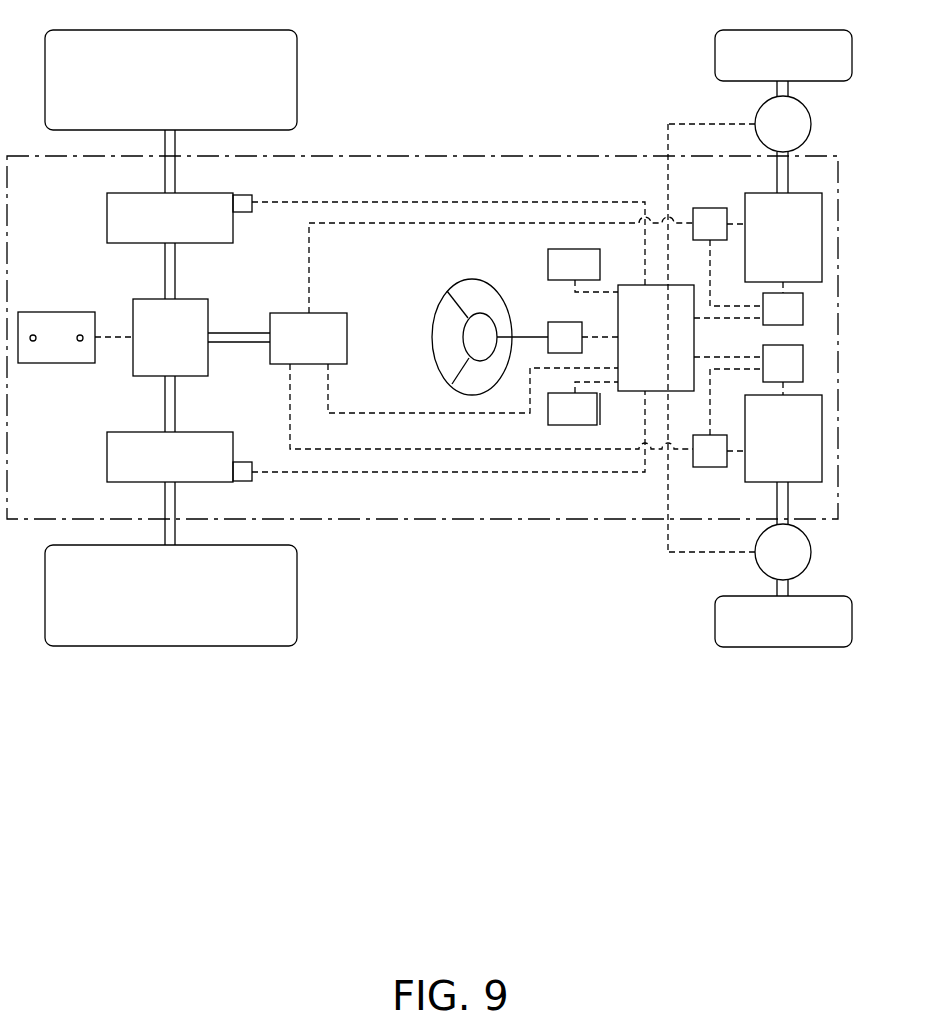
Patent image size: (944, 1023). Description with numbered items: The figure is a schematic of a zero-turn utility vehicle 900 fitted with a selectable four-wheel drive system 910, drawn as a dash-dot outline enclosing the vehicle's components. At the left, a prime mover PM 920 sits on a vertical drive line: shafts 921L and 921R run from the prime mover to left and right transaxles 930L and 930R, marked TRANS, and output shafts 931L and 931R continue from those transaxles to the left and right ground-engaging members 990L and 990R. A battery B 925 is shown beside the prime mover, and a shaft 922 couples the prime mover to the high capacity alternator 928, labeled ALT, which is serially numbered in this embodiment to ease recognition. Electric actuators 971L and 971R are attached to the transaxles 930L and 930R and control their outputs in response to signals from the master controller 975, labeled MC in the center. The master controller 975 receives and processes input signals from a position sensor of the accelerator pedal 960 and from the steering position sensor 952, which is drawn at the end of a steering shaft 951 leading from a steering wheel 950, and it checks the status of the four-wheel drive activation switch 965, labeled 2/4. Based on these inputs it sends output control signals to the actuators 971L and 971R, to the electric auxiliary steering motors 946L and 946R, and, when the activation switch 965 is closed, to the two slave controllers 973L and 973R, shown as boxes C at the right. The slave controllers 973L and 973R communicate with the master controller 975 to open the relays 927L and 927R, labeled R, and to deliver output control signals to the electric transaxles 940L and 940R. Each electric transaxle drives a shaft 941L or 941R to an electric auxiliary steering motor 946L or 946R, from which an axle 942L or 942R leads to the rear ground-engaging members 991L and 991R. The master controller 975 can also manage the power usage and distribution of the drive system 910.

The utility vehicle 900 is at (386, 120).
The selectable four-wheel drive system 910 is at (70, 194).
The prime mover 920 is at (208, 362).
The left drive shaft 921L is at (165, 272).
The right drive shaft 921R is at (165, 404).
The alternator shaft 922 is at (238, 333).
The battery 925 is at (37, 312).
The high capacity alternator 928 is at (347, 338).
The transaxle 930L is at (107, 221).
The transaxle 930R is at (107, 458).
The left output shaft 931L is at (165, 168).
The right output shaft 931R is at (165, 497).
The electric transaxle 940L is at (822, 239).
The electric transaxle 940R is at (822, 438).
The left motor shaft 941L is at (790, 172).
The right motor shaft 941R is at (790, 503).
The left axle shaft 942L is at (790, 88).
The right axle shaft 942R is at (790, 588).
The electric auxiliary steering motor 946L is at (812, 125).
The electric auxiliary steering motor 946R is at (812, 552).
The steering wheel 950 is at (445, 306).
The steering shaft 951 is at (532, 335).
The steering position sensor 952 is at (557, 322).
The accelerator pedal 960 is at (548, 421).
The four-wheel drive activation switch 965 is at (548, 263).
The electric actuator 971L is at (250, 197).
The electric actuator 971R is at (250, 484).
The slave controller 973L is at (803, 313).
The slave controller 973R is at (803, 364).
The master controller 975 is at (697, 350).
The relay 927L is at (707, 208).
The relay 927R is at (707, 467).
The left ground engaging member 990L is at (141, 92).
The right ground engaging member 990R is at (139, 606).
The left rear ground engaging member 991L is at (753, 67).
The right rear ground engaging member 991R is at (751, 633).